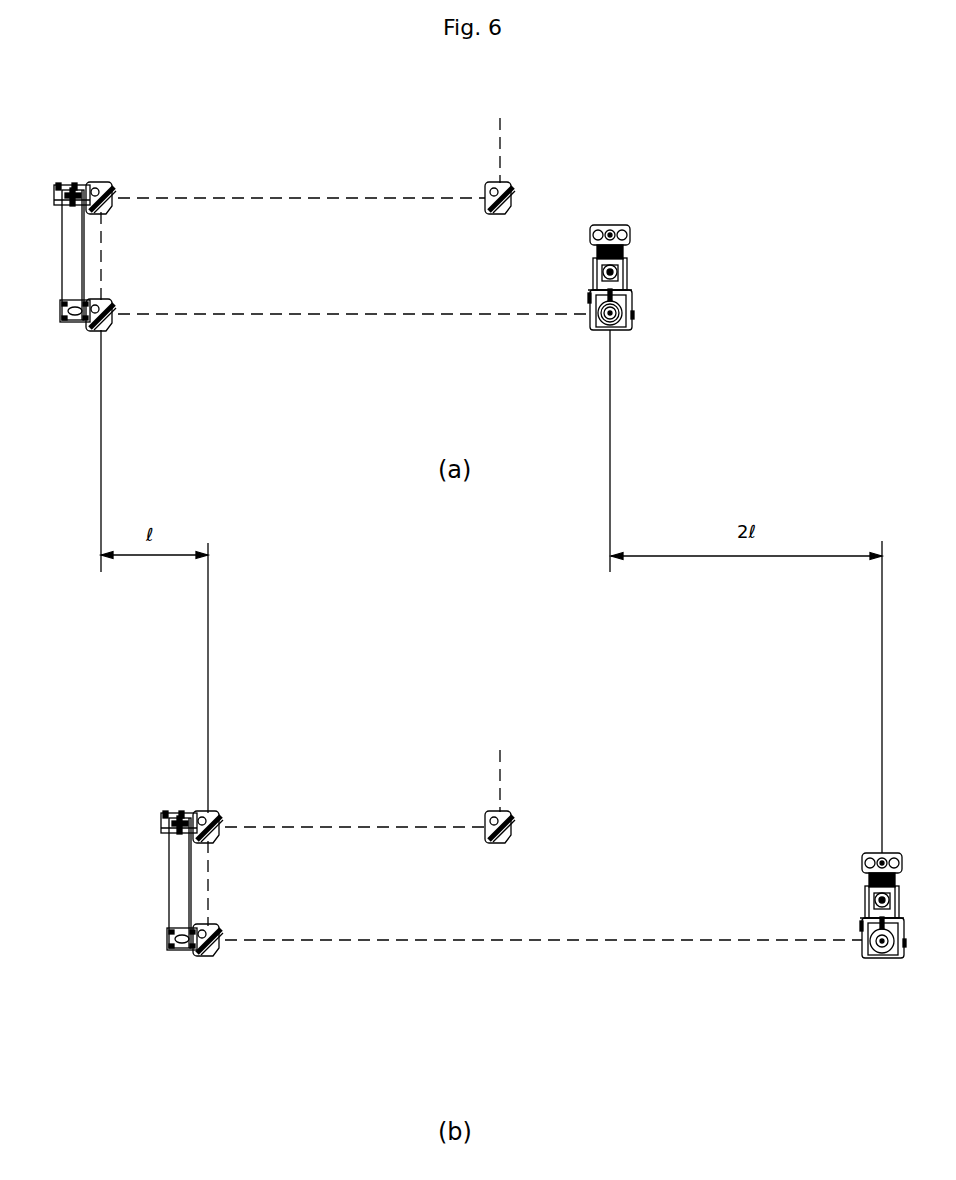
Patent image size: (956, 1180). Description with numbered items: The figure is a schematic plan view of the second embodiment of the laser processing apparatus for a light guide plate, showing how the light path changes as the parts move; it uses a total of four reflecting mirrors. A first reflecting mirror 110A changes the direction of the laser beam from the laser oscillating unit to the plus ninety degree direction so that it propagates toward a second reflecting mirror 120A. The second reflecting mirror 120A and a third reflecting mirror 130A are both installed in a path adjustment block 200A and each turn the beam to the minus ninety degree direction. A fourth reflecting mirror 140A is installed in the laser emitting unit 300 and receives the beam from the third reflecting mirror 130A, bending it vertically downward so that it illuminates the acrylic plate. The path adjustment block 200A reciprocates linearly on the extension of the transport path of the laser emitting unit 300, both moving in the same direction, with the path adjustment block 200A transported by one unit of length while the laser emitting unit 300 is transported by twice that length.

The path adjustment block 200A is at (72, 237).
The second reflecting mirror 120A is at (114, 202).
The third reflecting mirror 130A is at (118, 314).
The first reflecting mirror 110A is at (515, 198).
The laser emitting unit 300 is at (630, 260).
The fourth reflecting mirror 140A is at (600, 323).